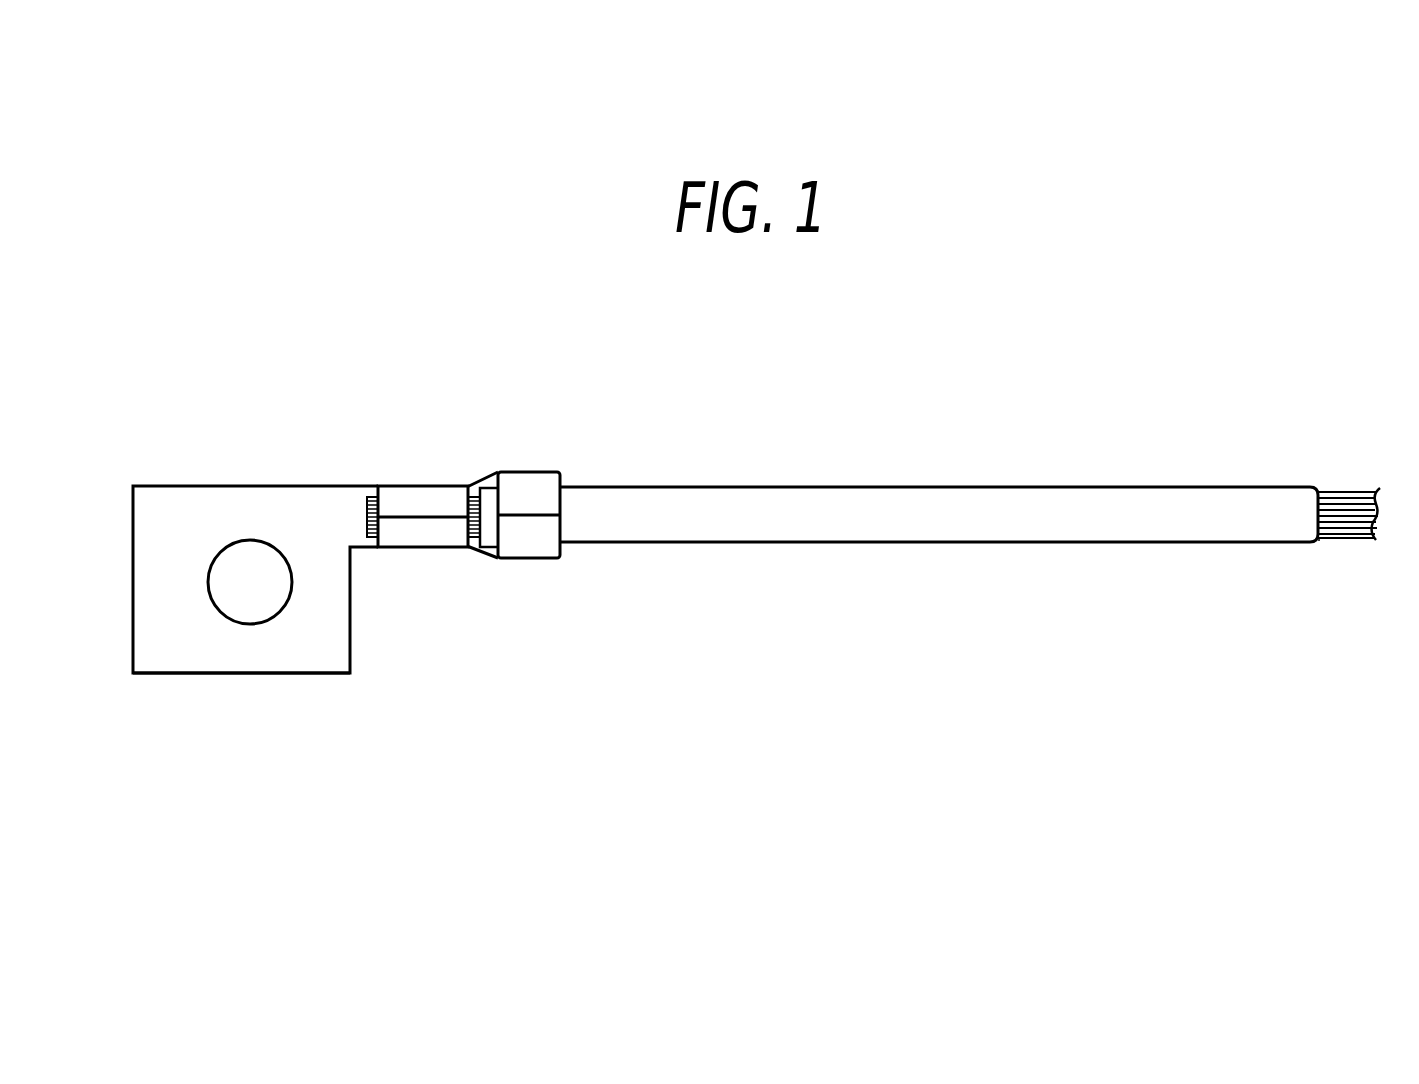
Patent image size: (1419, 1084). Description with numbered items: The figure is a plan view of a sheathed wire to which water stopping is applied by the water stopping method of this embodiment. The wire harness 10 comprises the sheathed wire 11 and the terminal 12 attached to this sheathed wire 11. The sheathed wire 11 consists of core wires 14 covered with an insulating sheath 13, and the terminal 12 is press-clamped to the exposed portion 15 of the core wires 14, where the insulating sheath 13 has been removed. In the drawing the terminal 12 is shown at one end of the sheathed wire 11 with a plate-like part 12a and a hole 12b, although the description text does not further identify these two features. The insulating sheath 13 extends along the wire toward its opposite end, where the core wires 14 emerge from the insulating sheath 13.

The wire harness 10 is at (889, 420).
The sheathed wire 11 is at (929, 518).
The terminal 12 is at (237, 507).
The plate portion of terminal 12a is at (193, 658).
The bolt hole 12b is at (227, 612).
The insulating sheath 13 is at (1210, 525).
The core wires 14 is at (1345, 537).
The exposed portion 15 is at (461, 488).